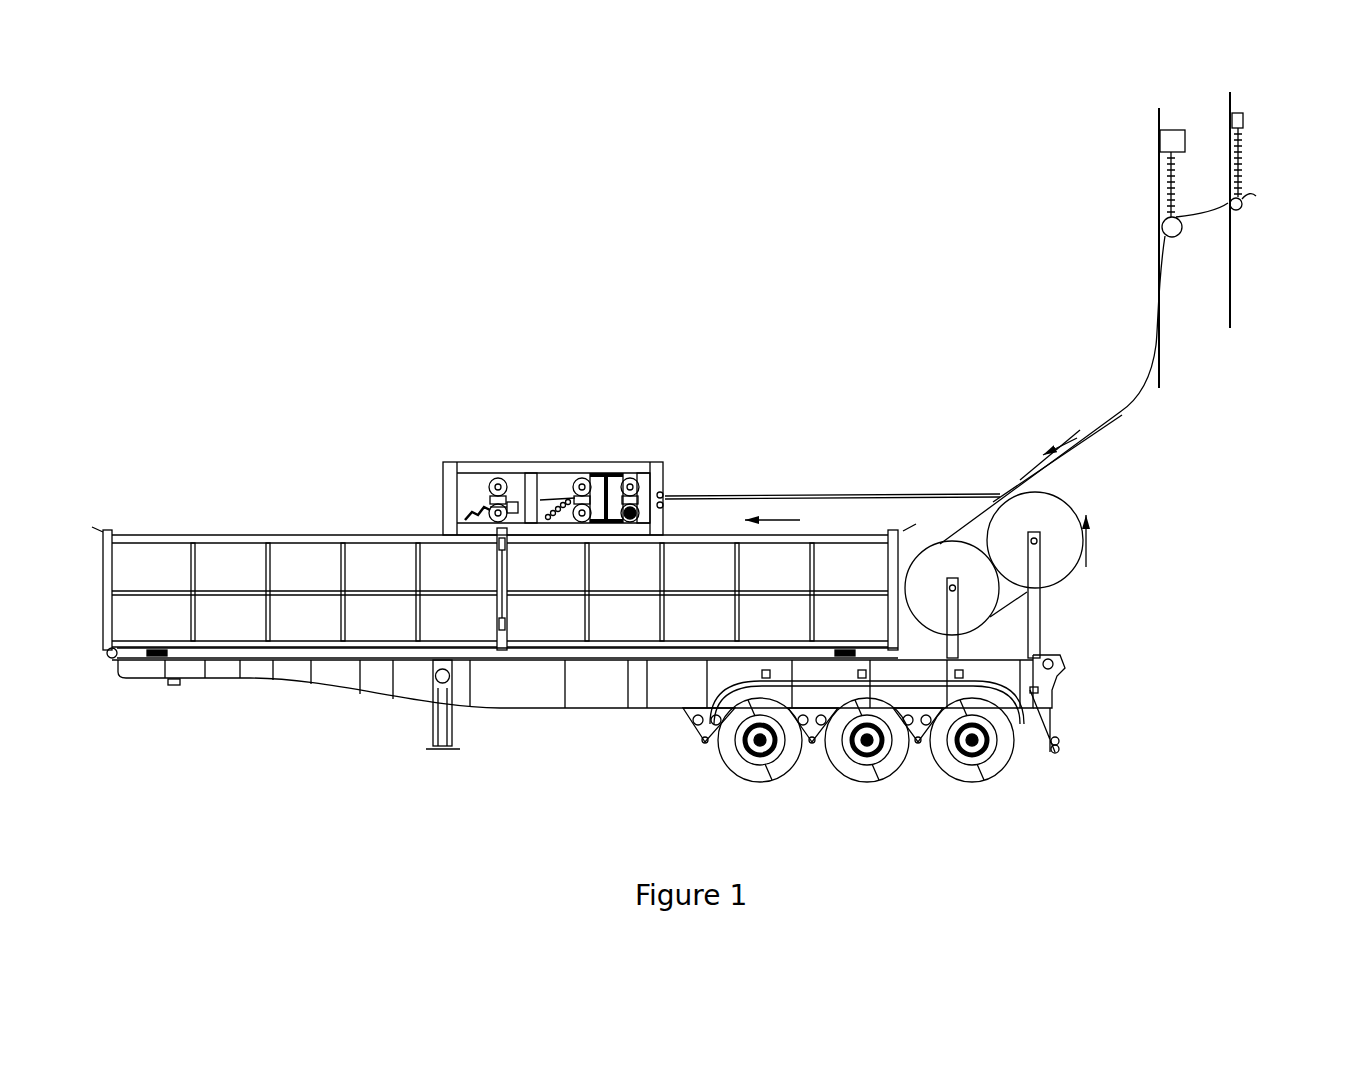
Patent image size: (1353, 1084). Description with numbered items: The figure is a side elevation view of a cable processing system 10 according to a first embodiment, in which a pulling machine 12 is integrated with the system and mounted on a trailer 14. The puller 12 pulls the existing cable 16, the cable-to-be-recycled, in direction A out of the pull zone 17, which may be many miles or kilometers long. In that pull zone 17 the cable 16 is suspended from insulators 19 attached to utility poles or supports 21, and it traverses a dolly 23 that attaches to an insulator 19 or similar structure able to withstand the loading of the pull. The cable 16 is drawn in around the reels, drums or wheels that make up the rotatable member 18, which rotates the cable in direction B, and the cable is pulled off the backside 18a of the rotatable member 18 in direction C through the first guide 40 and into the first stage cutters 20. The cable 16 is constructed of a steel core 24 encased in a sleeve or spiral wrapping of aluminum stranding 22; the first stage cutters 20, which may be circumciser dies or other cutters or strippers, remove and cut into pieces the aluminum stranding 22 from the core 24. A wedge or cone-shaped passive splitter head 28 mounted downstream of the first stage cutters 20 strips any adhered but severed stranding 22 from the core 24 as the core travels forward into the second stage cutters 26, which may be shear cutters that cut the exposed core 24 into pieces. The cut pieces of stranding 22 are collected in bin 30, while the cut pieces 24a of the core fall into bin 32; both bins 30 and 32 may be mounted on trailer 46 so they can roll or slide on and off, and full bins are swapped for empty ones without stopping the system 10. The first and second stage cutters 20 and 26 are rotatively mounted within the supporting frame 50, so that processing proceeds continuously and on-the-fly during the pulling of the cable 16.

The processing system 10 is at (546, 345).
The pulling machine 12 is at (955, 440).
The trailer 14 is at (408, 690).
The cable 16 is at (820, 495).
The pull zone 17 is at (1052, 215).
The rotatable member 18 is at (1062, 565).
The backside of rotatable member 18a is at (1023, 485).
The insulators 19 is at (1170, 170).
The first stage cutters 20 is at (596, 475).
The utility poles or supports 21 is at (1231, 320).
The aluminum stranding 22 is at (553, 522).
The dolly 23 is at (1242, 208).
The steel core 24 is at (517, 484).
The cut pieces of core 24a is at (475, 502).
The second stage cutters 26 is at (508, 470).
The passive splitter head 28 is at (545, 500).
The bin 30 is at (560, 628).
The bin 32 is at (298, 630).
The first guide 40 is at (667, 493).
The trailer 46 is at (661, 710).
The supporting frame 50 is at (640, 458).